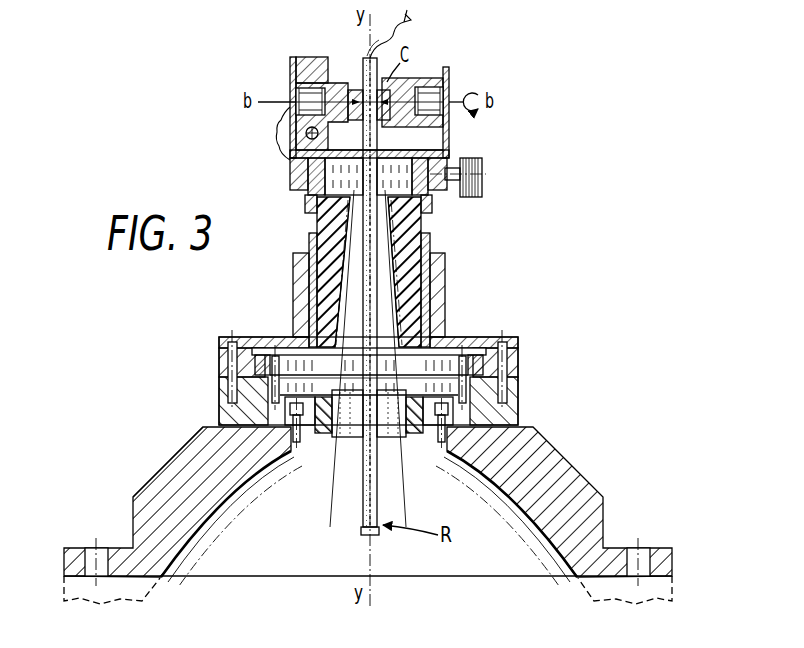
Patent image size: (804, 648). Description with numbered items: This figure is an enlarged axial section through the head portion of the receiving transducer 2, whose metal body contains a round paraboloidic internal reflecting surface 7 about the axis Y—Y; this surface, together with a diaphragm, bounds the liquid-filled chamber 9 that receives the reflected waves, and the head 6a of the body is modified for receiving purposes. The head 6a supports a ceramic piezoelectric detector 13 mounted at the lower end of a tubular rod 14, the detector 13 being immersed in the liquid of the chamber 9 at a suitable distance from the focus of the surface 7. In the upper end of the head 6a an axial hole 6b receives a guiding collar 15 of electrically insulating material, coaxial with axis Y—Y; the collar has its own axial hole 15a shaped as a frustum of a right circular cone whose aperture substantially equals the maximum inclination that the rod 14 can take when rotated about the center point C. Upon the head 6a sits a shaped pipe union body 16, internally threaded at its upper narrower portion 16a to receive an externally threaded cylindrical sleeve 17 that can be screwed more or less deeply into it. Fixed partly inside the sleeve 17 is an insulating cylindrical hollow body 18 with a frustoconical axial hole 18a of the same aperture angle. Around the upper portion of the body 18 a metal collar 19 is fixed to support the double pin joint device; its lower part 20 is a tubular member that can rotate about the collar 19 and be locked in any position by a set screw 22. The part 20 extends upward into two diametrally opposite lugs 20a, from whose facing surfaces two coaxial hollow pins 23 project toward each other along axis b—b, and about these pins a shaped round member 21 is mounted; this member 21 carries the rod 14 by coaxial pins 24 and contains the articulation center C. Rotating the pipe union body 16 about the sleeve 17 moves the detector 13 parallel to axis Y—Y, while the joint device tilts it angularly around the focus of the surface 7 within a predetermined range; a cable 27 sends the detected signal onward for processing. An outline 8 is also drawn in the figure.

The receiving transducer 2 is at (176, 438).
The head 6a is at (150, 523).
The axial hole 6b is at (435, 453).
The paraboloidic internal reflecting surface 7 is at (527, 530).
The workpiece outline 8 is at (662, 592).
The chamber 9 is at (280, 545).
The ceramic piezoelectric detector 13 is at (380, 534).
The tubular rod 14 is at (377, 471).
The guiding collar 15 is at (331, 440).
The axial hole 15a is at (423, 489).
The pipe union body 16 is at (518, 355).
The upper narrower portion 16a is at (443, 304).
The cylindrical sleeve 17 is at (432, 246).
The cylindrical hollow body 18 is at (413, 223).
The axial hole 18a is at (345, 277).
The metal ring or collar 19 is at (300, 198).
The lower part of joint device 20 is at (292, 170).
The lugs 20a is at (450, 133).
The shaped round member 21 is at (390, 88).
The set screw 22 is at (484, 172).
The coaxial hollow pins 23 is at (292, 72).
The coaxial pins 24 is at (358, 86).
The cable 27 is at (397, 32).